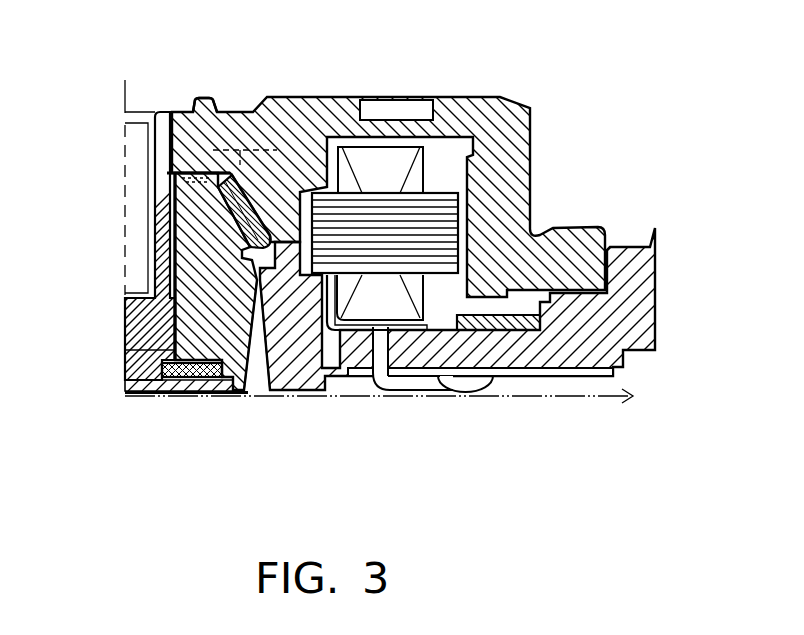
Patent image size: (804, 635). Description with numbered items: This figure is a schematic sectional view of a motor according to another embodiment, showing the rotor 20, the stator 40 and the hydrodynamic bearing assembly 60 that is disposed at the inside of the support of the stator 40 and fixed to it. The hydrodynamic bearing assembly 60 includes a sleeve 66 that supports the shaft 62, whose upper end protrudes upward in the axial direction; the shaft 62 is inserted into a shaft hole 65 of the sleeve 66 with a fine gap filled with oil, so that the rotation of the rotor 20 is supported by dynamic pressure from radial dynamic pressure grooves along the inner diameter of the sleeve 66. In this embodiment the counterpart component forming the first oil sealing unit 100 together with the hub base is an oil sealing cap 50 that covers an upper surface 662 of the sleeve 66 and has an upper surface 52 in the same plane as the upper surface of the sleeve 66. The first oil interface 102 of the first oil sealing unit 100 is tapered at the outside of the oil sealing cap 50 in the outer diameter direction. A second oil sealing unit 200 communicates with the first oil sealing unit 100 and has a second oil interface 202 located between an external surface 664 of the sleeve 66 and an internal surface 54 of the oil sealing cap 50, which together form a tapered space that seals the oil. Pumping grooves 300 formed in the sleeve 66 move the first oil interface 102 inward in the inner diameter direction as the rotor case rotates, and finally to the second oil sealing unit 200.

The rotor 20 is at (526, 97).
The stator 40 is at (453, 399).
The oil sealing cap 50 is at (248, 190).
The upper surface 52 is at (199, 97).
The internal surface 54 is at (318, 345).
The hydrodynamic bearing assembly 60 is at (242, 402).
The shaft 62 is at (125, 320).
The shaft hole 65 is at (125, 350).
The sleeve 66 is at (205, 382).
The upper surface 662 is at (210, 162).
The external surface 664 is at (263, 388).
The first oil sealing unit 100 is at (243, 150).
The first oil interface 102 is at (232, 195).
The second oil sealing unit 200 is at (224, 213).
The second oil interface 202 is at (300, 222).
The pumping grooves 300 is at (205, 190).